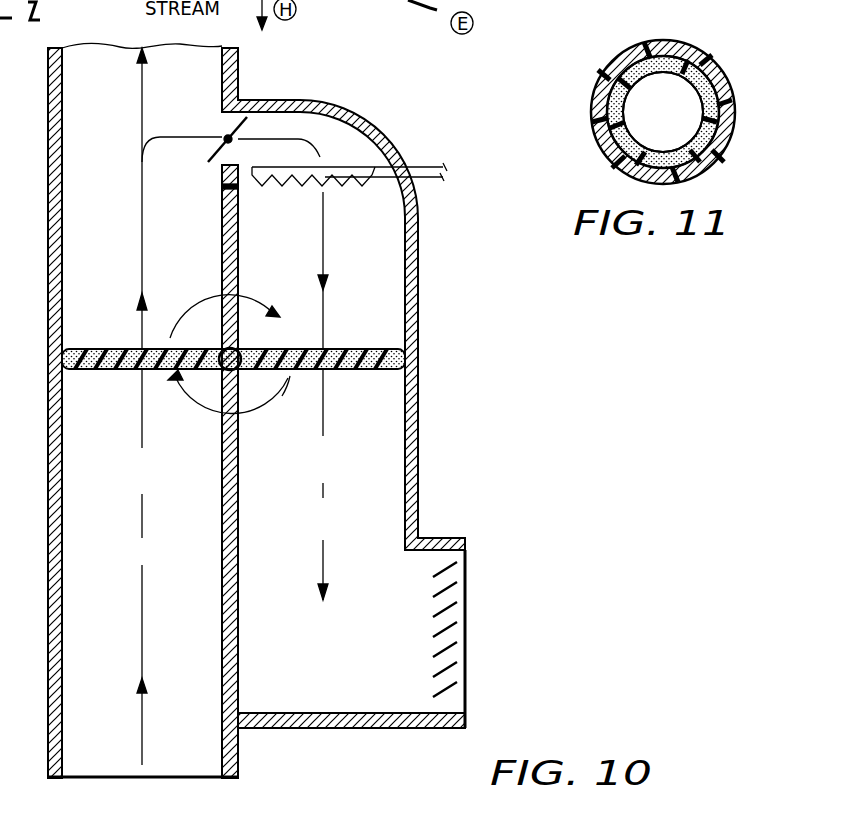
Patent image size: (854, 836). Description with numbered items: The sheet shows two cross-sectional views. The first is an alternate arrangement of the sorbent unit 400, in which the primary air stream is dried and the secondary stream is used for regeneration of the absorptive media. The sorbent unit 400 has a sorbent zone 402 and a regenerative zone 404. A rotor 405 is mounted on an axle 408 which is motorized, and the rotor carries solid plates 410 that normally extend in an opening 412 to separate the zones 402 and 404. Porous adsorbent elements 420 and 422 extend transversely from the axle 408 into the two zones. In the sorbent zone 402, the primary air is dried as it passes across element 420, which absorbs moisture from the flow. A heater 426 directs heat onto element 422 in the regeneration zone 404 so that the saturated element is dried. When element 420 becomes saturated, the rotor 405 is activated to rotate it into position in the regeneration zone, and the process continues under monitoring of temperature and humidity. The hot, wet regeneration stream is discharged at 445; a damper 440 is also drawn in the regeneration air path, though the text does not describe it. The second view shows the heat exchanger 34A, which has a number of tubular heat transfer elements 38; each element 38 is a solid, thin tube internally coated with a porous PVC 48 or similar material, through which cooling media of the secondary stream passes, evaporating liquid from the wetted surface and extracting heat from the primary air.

In FIG. 10, the sorbent unit 400 is at (445, 308).
In FIG. 10, the sorbent zone 402 is at (118, 427).
In FIG. 10, the regenerative zone 404 is at (380, 430).
In FIG. 10, the rotor 405 is at (212, 382).
In FIG. 10, the axle 408 is at (242, 372).
In FIG. 10, the solid plates 410 is at (238, 225).
In FIG. 10, the opening 412 is at (237, 528).
In FIG. 10, the adsorbent element 420 is at (118, 322).
In FIG. 10, the adsorbent element 422 is at (398, 378).
In FIG. 10, the heater 426 is at (358, 163).
In FIG. 10, the damper valve 440 is at (248, 126).
In FIG. 10, the discharge 445 is at (448, 649).
In FIG. 11, the heat exchanger 34A is at (623, 36).
In FIG. 11, the heat transfer element 38 is at (602, 143).
In FIG. 11, the porous PVC 48 is at (625, 101).